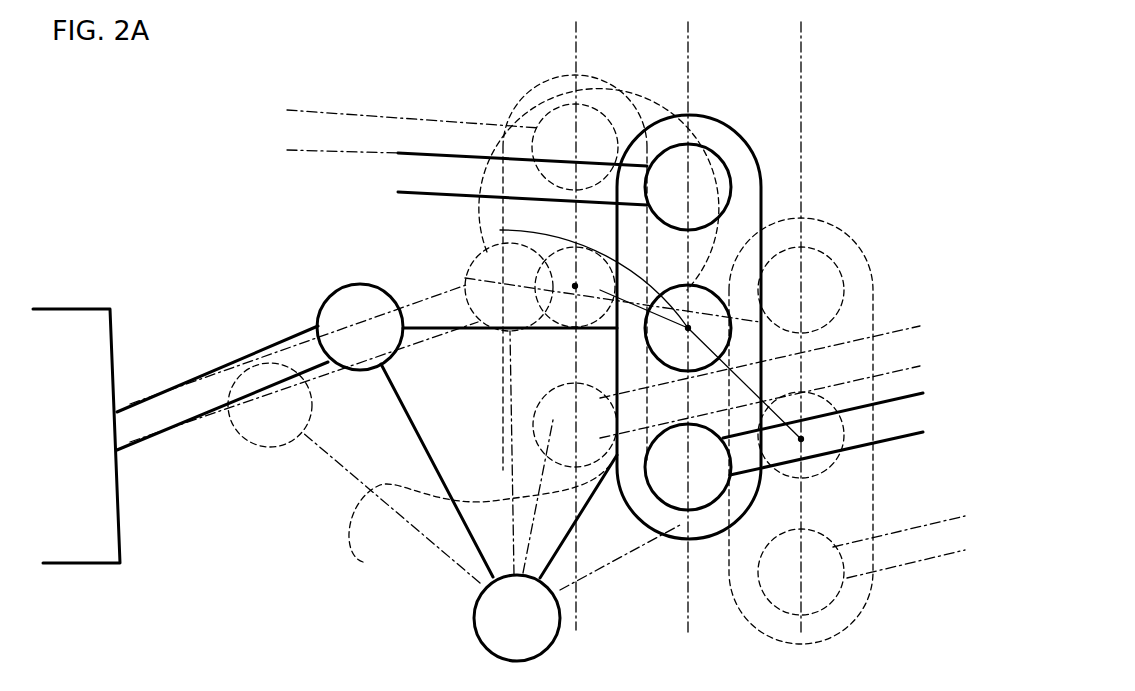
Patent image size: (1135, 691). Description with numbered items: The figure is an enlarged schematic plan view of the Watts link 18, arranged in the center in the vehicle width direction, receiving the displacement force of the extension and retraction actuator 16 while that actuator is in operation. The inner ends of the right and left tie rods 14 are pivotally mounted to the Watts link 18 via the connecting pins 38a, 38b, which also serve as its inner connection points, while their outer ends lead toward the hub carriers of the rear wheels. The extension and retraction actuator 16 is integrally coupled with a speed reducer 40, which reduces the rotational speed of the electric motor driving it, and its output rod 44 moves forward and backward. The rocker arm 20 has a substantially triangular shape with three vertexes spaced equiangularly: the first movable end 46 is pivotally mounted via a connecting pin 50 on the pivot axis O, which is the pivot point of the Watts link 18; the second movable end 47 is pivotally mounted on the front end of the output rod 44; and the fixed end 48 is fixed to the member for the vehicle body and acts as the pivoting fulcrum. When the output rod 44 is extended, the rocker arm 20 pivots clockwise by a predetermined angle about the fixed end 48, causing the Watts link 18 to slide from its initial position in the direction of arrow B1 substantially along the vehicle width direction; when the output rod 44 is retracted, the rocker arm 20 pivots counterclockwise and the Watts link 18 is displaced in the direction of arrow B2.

The tie rod 14 is at (425, 153).
The extension and retraction actuator 16 is at (80, 298).
The Watts link 18 is at (537, 84).
The rocker arm 20 is at (420, 520).
The connecting pin 38a is at (762, 183).
The connecting pin 38b is at (660, 508).
The speed reducer 40 is at (120, 527).
The output rod 44 is at (283, 340).
The first movable end 46 is at (712, 192).
The second movable end 47 is at (352, 285).
The fixed end 48 is at (474, 623).
The connecting pin 50 is at (598, 345).
The pivot axis O is at (573, 284).
The arrow B1 is at (782, 111).
The arrow B2 is at (675, 67).